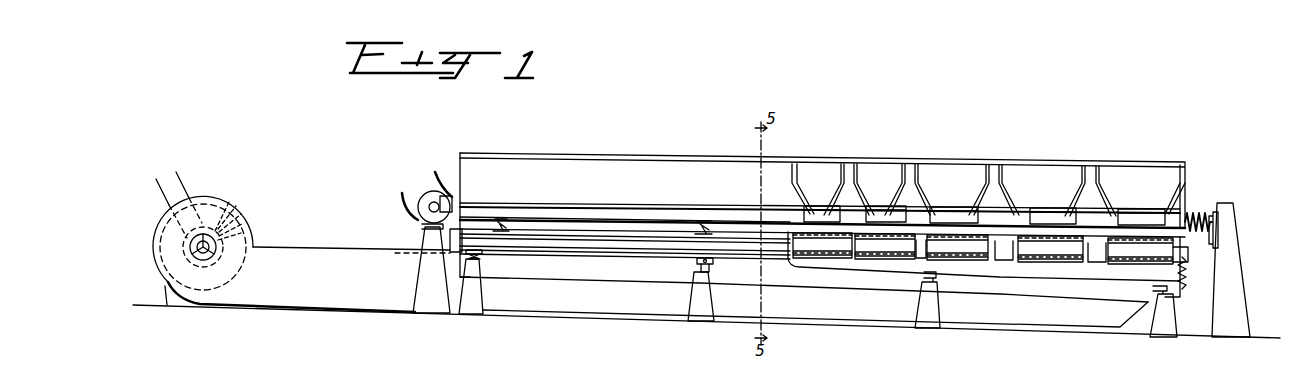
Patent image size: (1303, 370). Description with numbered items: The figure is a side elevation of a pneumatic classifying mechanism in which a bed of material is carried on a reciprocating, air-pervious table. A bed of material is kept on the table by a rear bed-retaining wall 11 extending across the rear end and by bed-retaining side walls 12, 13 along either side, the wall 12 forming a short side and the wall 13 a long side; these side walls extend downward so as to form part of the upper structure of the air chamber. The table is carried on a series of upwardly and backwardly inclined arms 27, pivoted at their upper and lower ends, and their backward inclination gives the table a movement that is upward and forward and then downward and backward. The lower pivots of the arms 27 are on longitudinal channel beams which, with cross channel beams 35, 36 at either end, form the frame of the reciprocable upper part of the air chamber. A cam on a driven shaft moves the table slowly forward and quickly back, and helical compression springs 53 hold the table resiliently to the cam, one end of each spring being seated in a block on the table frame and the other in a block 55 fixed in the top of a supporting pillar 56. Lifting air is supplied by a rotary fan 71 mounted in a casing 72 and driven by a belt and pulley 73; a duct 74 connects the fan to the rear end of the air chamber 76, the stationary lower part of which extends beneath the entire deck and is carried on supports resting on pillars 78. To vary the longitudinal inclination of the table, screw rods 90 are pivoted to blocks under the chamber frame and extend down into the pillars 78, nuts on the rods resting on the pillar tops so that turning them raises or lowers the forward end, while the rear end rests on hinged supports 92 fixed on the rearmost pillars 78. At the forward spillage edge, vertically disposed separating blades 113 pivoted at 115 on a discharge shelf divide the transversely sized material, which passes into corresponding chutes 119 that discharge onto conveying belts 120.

The rear bed-retaining wall 11 is at (460, 153).
The bed-retaining side wall 12 is at (583, 163).
The bed-retaining side wall 13 is at (723, 160).
The upwardly and backwardly-inclined arms 27 is at (510, 222).
The cross channel beam 35 is at (450, 239).
The cross channel beam 36 is at (1188, 262).
The helical compression springs 53 is at (1197, 213).
The blocks 55 is at (1220, 222).
The supporting pillars 56 is at (1234, 275).
The rotary fan 71 is at (243, 214).
The casing 72 is at (206, 197).
The belt and pulley 73 is at (163, 224).
The duct 74 is at (317, 265).
The air chamber 76 is at (1012, 326).
The pillars 78 is at (484, 298).
The screw rods 90 is at (711, 263).
The hinged supports 92 is at (480, 257).
The separating blades 113 is at (993, 178).
The pivotal mounting 115 is at (1102, 178).
The chutes 119 is at (822, 208).
The conveying belts 120 is at (981, 236).